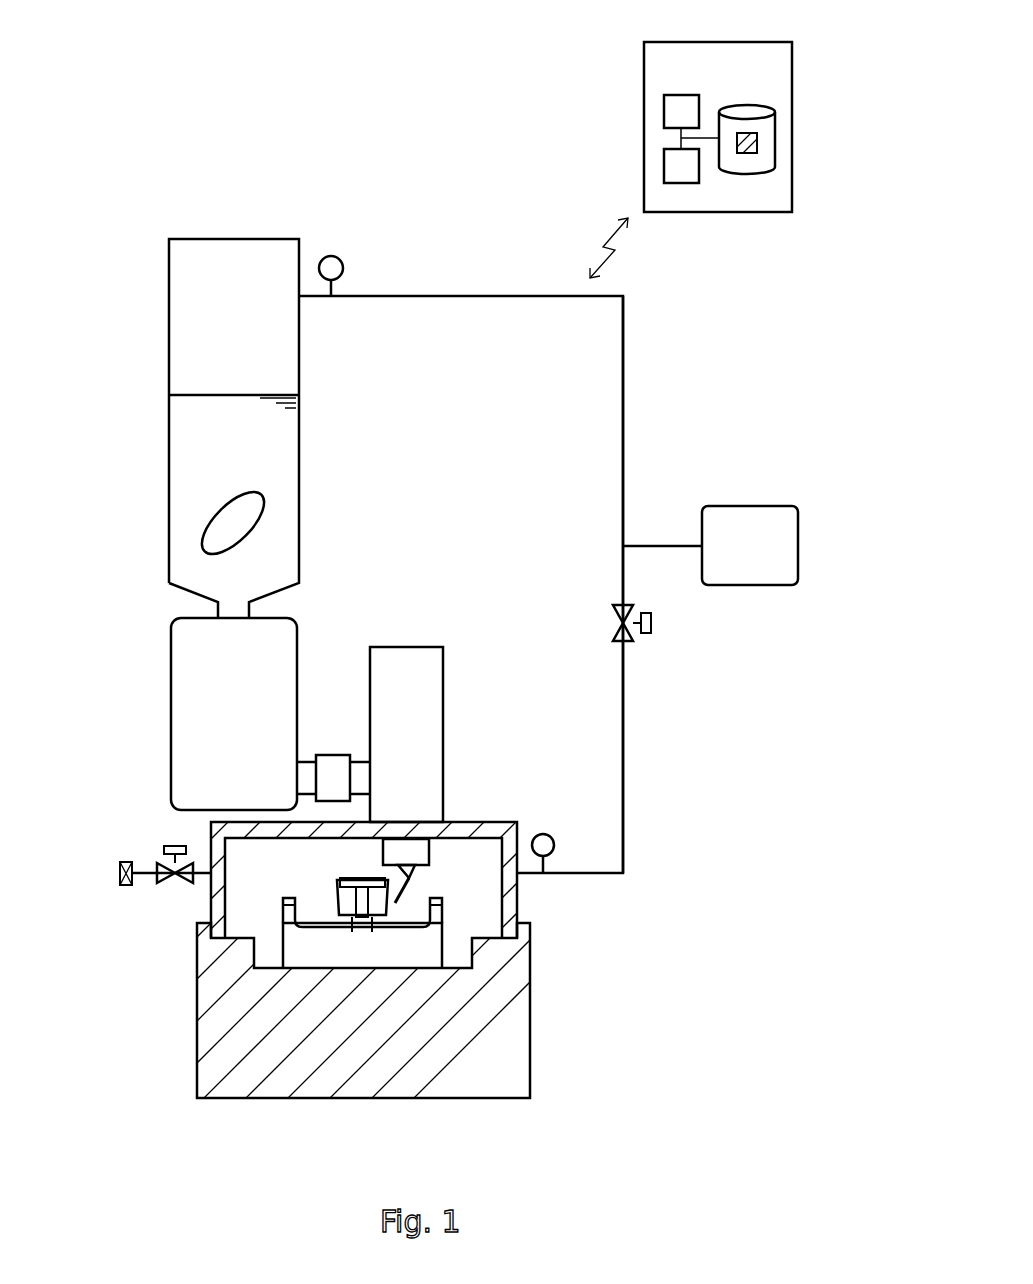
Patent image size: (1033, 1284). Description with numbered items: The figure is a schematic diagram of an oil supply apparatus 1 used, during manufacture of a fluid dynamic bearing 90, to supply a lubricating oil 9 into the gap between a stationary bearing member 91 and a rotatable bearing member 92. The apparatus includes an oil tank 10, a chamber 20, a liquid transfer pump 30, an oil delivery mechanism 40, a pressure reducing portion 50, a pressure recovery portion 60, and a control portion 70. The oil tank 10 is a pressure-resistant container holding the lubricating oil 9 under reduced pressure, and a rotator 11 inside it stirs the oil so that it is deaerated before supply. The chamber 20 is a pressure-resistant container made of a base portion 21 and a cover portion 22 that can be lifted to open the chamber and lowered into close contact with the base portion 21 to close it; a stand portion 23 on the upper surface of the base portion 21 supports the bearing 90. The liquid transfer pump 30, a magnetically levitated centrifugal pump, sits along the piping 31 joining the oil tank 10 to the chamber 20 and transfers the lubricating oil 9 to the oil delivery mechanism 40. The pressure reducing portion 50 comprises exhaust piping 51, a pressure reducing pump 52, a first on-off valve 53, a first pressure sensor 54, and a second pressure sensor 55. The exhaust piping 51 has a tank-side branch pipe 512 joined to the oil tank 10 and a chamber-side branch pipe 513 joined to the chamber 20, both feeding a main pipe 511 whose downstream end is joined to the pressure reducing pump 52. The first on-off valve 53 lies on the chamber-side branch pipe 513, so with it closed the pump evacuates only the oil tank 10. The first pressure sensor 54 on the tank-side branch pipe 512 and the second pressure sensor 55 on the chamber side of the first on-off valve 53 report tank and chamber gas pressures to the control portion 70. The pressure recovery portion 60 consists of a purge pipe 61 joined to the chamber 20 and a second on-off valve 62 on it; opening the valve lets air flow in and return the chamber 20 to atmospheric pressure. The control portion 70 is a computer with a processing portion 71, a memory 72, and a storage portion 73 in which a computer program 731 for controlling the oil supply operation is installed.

The oil supply apparatus 1 is at (283, 120).
The lubricating oil 9 is at (256, 457).
The oil tank 10 is at (223, 238).
The rotator 11 is at (230, 520).
The chamber 20 is at (330, 980).
The base portion 21 is at (510, 1011).
The cover portion 22 is at (508, 898).
The stand portion 23 is at (375, 950).
The liquid transfer pump 30 is at (190, 712).
The piping 31 is at (307, 775).
The oil delivery mechanism 40 is at (456, 860).
The pressure reducing portion 50 is at (757, 612).
The exhaust piping 51 is at (533, 428).
The main pipe 511 is at (652, 546).
The tank-side branch pipe 512 is at (623, 420).
The chamber-side branch pipe 513 is at (623, 585).
The pressure reducing pump 52 is at (752, 506).
The first on-off valve 53 is at (652, 623).
The first pressure sensor 54 is at (333, 256).
The second pressure sensor 55 is at (543, 834).
The pressure recovery portion 60 is at (161, 908).
The purge pipe 61 is at (143, 874).
The second on-off valve 62 is at (175, 845).
The control portion 70 is at (716, 153).
The processing portion 71 is at (664, 110).
The memory 72 is at (664, 165).
The storage portion 73 is at (775, 138).
The computer program 731 is at (737, 170).
The fluid dynamic bearing 90 is at (368, 892).
The stationary bearing member 91 is at (347, 898).
The rotatable bearing member 92 is at (400, 928).